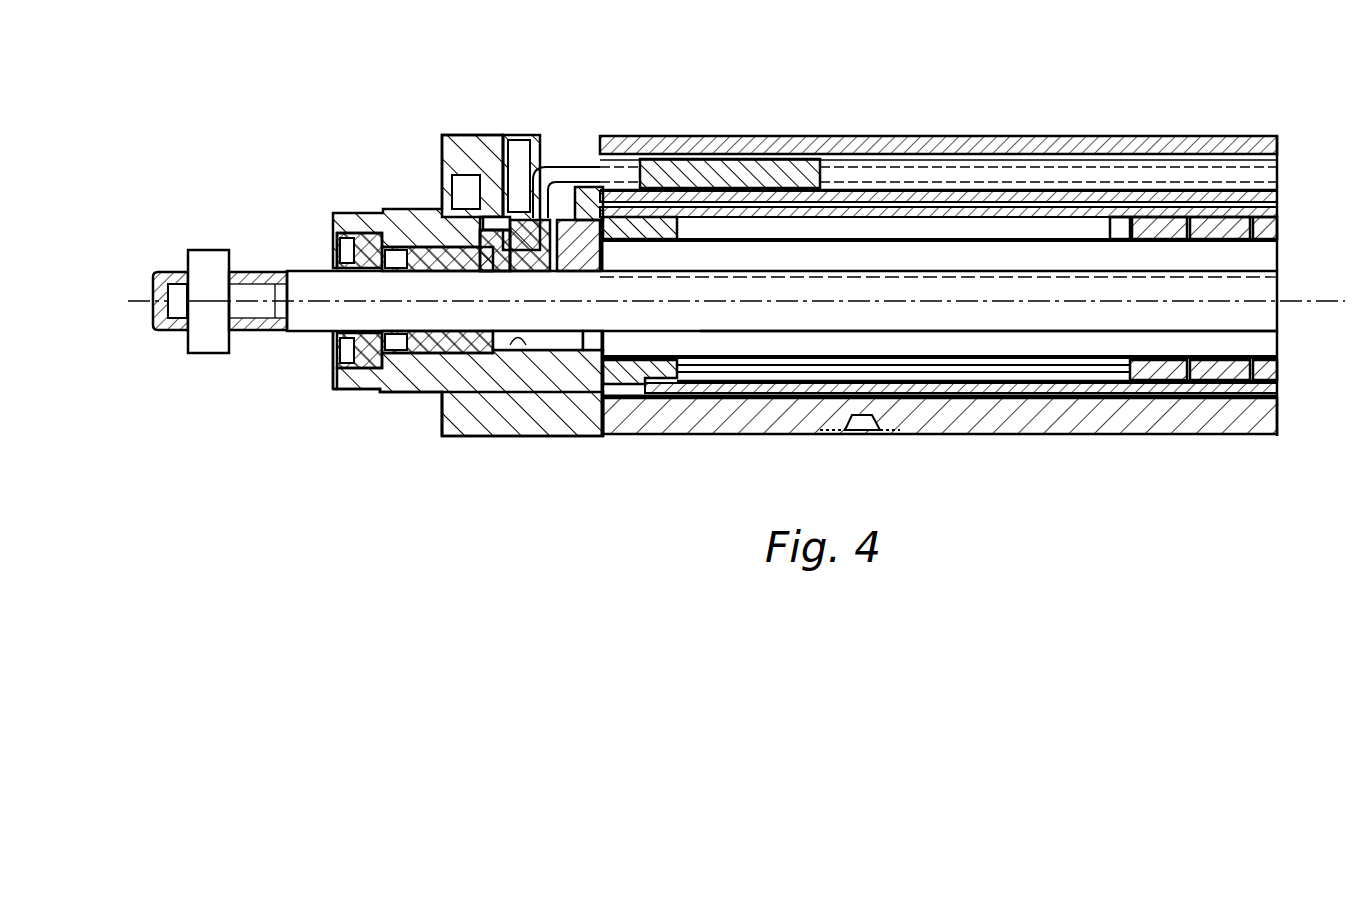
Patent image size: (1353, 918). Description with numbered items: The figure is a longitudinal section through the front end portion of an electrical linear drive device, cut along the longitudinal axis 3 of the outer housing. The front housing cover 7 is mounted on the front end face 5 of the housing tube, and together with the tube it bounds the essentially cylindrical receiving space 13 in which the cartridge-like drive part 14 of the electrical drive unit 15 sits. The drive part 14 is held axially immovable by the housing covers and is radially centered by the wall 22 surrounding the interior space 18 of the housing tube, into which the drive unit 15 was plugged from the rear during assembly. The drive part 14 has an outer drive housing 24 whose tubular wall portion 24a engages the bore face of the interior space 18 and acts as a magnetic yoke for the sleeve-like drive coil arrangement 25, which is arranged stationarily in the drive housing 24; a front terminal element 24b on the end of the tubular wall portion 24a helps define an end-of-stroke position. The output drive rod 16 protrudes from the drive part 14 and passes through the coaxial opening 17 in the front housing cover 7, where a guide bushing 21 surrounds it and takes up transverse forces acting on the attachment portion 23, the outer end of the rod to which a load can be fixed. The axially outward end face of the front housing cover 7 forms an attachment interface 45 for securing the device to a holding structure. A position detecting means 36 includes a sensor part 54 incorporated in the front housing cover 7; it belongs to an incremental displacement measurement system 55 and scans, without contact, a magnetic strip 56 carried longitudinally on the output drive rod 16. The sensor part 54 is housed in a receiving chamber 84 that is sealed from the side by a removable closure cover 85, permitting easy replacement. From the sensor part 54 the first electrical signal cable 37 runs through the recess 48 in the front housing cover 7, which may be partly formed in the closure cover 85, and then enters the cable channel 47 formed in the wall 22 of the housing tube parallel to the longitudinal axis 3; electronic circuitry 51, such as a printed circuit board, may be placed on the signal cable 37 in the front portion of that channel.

The longitudinal axis 3 is at (1218, 318).
The front end face 5 is at (570, 405).
The front housing cover 7 is at (482, 405).
The receiving space 13 is at (943, 212).
The drive part 14 is at (1011, 232).
The drive unit 15 is at (1222, 395).
The output drive rod 16 is at (1077, 312).
The coaxial opening 17 is at (530, 345).
The interior space 18 is at (737, 393).
The guide bushing 21 is at (403, 212).
The wall 22 is at (1028, 422).
The attachment portion 23 is at (257, 271).
The drive housing 24 is at (1160, 385).
The tubular wall portion 24a is at (866, 200).
The front terminal element 24b is at (636, 378).
The drive coil arrangement 25 is at (1222, 233).
The position detecting means 36 is at (519, 215).
The displacement measurement system 55 is at (519, 215).
The first electrical signal cable 37 is at (580, 175).
The attachment interface 45 is at (428, 402).
The cable channel 47 is at (1070, 160).
The recess 48 is at (547, 162).
The electronic circuitry 51 is at (699, 140).
The sensor part 54 is at (513, 277).
The magnetic strip 56 is at (790, 186).
The receiving chamber 84 is at (531, 262).
The closure cover 85 is at (478, 138).